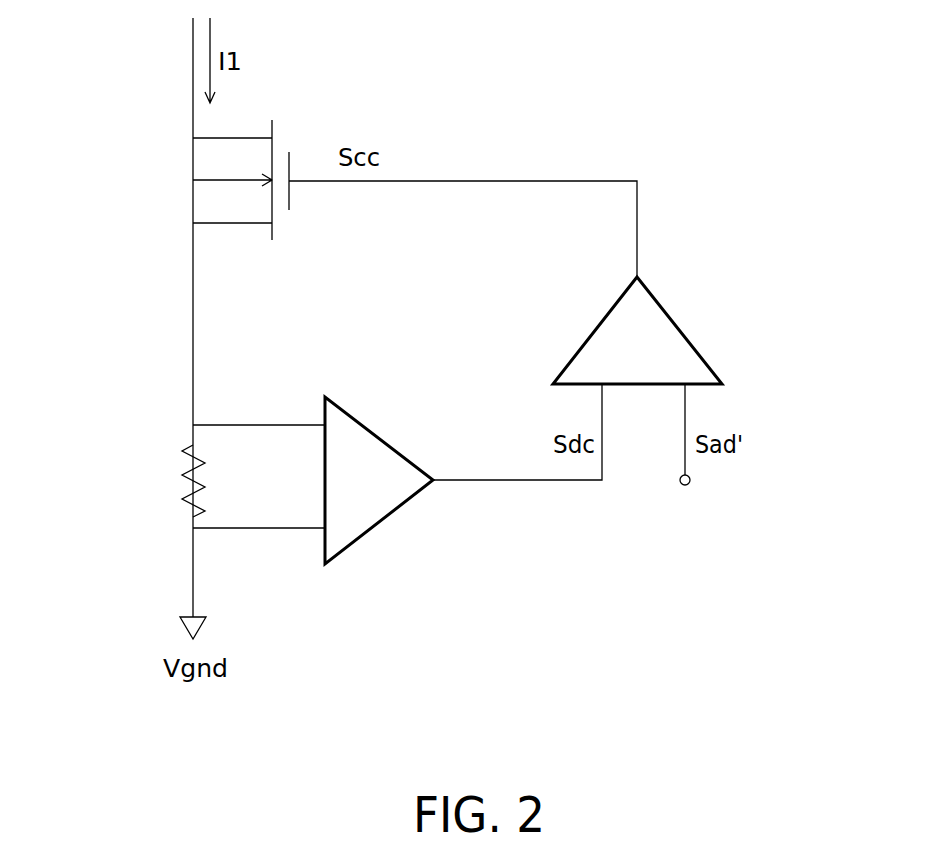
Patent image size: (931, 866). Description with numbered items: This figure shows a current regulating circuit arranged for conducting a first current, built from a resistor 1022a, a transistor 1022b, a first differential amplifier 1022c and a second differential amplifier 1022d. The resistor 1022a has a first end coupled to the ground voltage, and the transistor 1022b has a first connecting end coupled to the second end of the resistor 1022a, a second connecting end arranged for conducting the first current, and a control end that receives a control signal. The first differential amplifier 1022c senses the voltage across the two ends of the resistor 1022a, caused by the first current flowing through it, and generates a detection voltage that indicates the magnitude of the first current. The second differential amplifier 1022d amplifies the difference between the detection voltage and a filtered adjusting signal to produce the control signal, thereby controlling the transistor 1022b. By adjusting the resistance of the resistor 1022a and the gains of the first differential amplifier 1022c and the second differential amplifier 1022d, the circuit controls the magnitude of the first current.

The resistor 1022a is at (190, 461).
The transistor 1022b is at (200, 158).
The first differential amplifier 1022c is at (392, 517).
The second differential amplifier 1022d is at (683, 335).